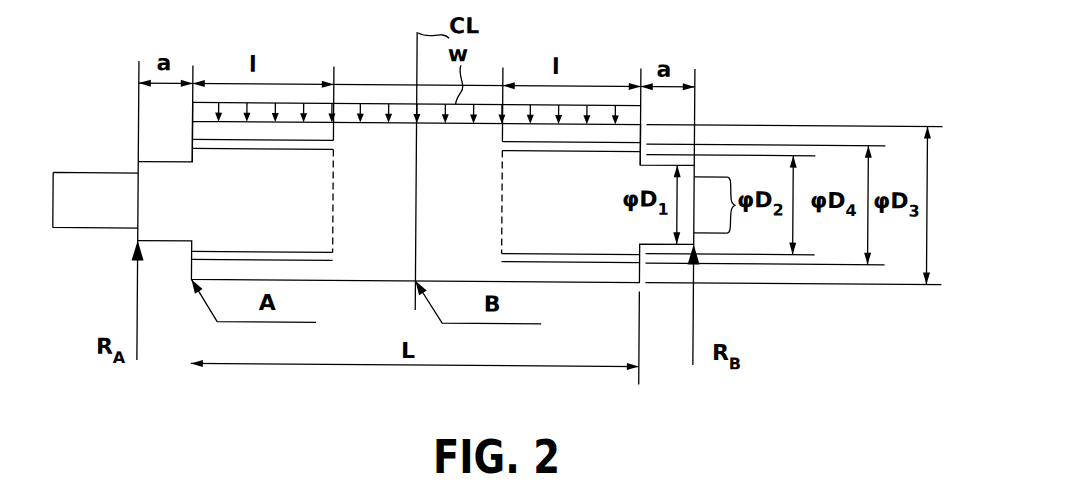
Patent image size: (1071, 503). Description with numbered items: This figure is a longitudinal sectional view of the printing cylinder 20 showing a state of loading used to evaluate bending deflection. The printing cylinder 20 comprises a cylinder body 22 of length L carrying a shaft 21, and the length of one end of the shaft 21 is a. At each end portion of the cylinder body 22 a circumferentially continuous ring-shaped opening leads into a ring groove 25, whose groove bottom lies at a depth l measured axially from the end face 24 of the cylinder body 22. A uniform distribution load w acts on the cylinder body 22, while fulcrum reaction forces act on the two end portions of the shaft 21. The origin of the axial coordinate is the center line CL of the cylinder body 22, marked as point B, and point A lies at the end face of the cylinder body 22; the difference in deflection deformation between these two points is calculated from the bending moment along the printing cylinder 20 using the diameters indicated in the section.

The printing cylinder 20 is at (356, 284).
The shaft 21 is at (163, 164).
The cylinder body 22 is at (373, 123).
The end face 24 is at (192, 132).
The ring groove 25 is at (270, 152).